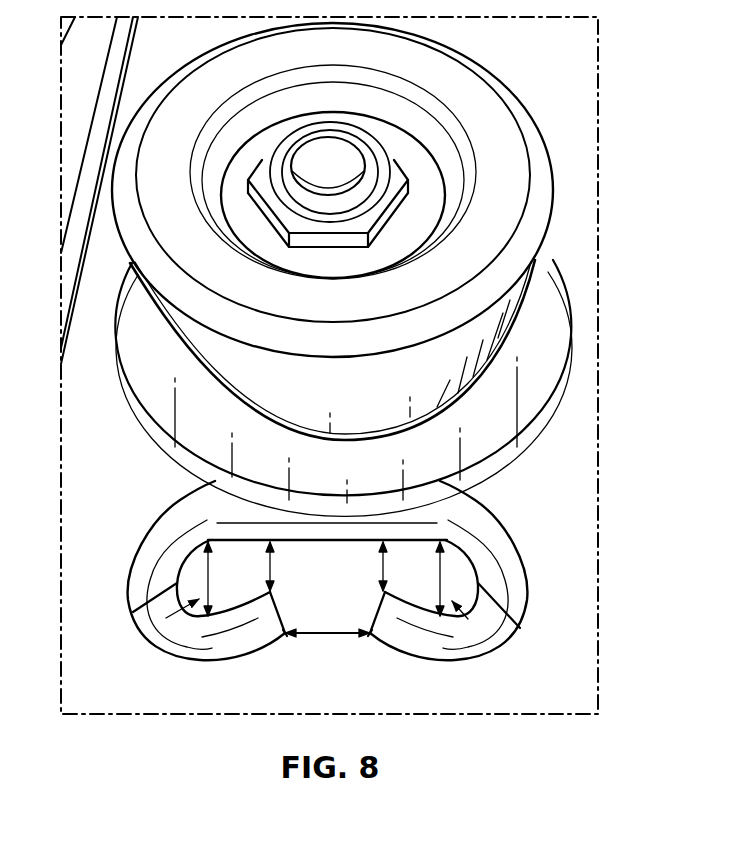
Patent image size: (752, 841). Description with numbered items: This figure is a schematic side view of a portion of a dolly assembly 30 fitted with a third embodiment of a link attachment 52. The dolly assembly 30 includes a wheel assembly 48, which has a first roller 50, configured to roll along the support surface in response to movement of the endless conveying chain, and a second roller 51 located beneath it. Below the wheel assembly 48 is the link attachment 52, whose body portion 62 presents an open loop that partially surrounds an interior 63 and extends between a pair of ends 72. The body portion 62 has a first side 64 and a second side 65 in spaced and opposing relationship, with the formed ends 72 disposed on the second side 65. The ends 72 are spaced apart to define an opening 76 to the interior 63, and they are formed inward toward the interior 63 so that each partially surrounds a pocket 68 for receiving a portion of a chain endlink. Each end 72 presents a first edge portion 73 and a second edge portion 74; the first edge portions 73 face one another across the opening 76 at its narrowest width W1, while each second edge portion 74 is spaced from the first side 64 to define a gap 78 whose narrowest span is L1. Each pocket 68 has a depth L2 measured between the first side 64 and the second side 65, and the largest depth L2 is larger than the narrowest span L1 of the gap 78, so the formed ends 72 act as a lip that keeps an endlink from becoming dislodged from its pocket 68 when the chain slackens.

The wheel assembly 48 is at (577, 56).
The dolly assembly 30 is at (108, 146).
The first roller 50 is at (532, 151).
The second roller 51 is at (557, 325).
The link attachment 52 is at (205, 505).
The body portion 62 is at (467, 504).
The interior 63 is at (456, 561).
The first side 64 is at (243, 523).
The second side 65 is at (210, 650).
The pocket 68 is at (157, 643).
The end 72 is at (273, 606).
The first edge portion 73 is at (283, 636).
The second edge portion 74 is at (272, 578).
The opening 76 is at (318, 646).
The gap 78 is at (254, 561).
The narrowest span L1 is at (324, 579).
The depth L2 is at (165, 617).
The narrowest width W1 is at (320, 638).